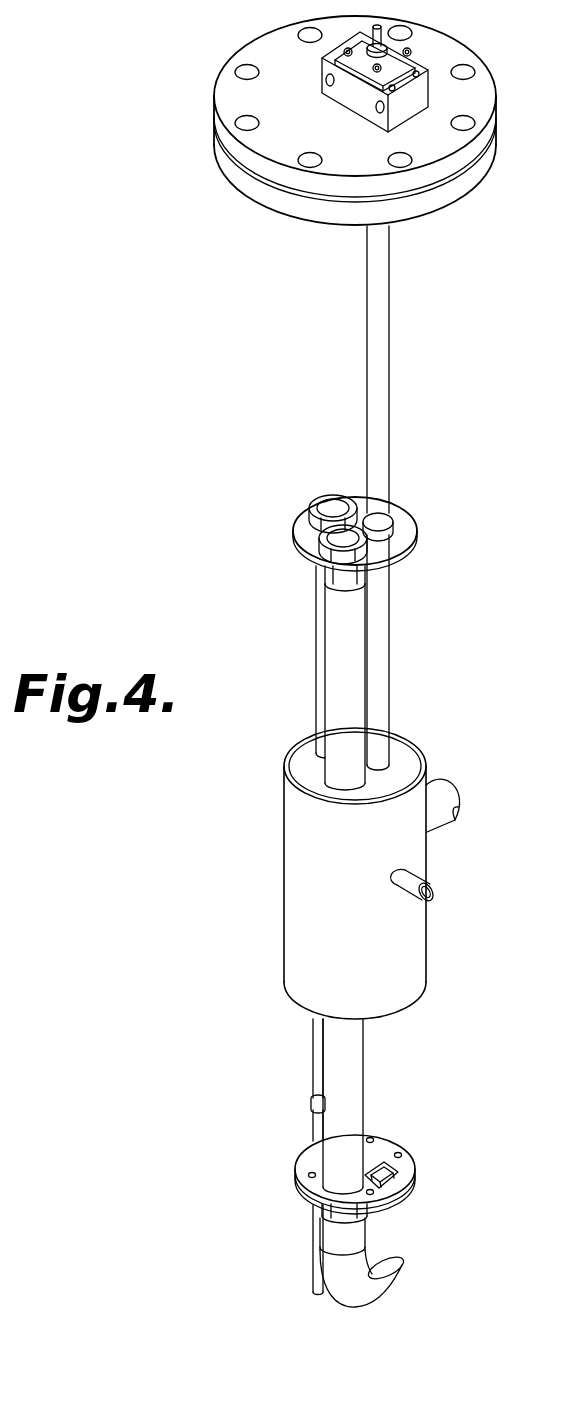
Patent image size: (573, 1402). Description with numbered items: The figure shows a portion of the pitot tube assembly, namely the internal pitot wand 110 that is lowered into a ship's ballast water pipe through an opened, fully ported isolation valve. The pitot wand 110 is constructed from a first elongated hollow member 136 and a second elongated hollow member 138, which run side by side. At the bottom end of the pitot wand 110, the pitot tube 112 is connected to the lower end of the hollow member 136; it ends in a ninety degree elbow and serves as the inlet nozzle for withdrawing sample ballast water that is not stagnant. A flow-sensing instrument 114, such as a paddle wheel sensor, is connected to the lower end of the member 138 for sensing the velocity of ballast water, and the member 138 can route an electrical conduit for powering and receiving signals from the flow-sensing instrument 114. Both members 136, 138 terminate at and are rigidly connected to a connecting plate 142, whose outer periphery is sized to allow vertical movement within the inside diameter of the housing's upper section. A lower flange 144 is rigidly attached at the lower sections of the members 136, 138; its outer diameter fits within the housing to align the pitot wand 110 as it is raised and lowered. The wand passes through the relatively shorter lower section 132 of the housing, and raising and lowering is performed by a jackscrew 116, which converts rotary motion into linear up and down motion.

The pitot wand 110 is at (492, 629).
The pitot tube 112 is at (402, 1273).
The flow-sensing instrument 114 is at (330, 1292).
The jackscrew 116 is at (387, 270).
The lower section 132 is at (289, 886).
The first elongated hollow member 136 is at (332, 685).
The second elongated hollow member 138 is at (318, 607).
The connecting plate 142 is at (410, 515).
The lower flange 144 is at (417, 1167).